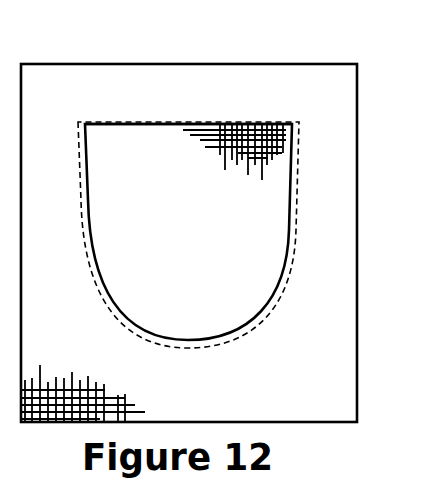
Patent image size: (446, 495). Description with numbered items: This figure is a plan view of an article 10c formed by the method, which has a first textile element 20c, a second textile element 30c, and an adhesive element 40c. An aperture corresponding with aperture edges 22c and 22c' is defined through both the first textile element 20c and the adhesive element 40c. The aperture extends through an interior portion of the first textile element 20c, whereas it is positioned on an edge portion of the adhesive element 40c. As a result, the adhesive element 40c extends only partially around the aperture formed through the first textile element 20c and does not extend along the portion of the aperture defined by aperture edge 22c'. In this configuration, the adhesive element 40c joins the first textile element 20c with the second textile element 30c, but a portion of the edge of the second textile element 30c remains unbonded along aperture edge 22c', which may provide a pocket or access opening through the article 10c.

The article 10c is at (373, 92).
The first textile element 20c is at (72, 83).
The second textile element 30c is at (125, 147).
The aperture edge 22c is at (188, 232).
The aperture edge 22c' is at (188, 155).
The adhesive element 40c is at (226, 338).